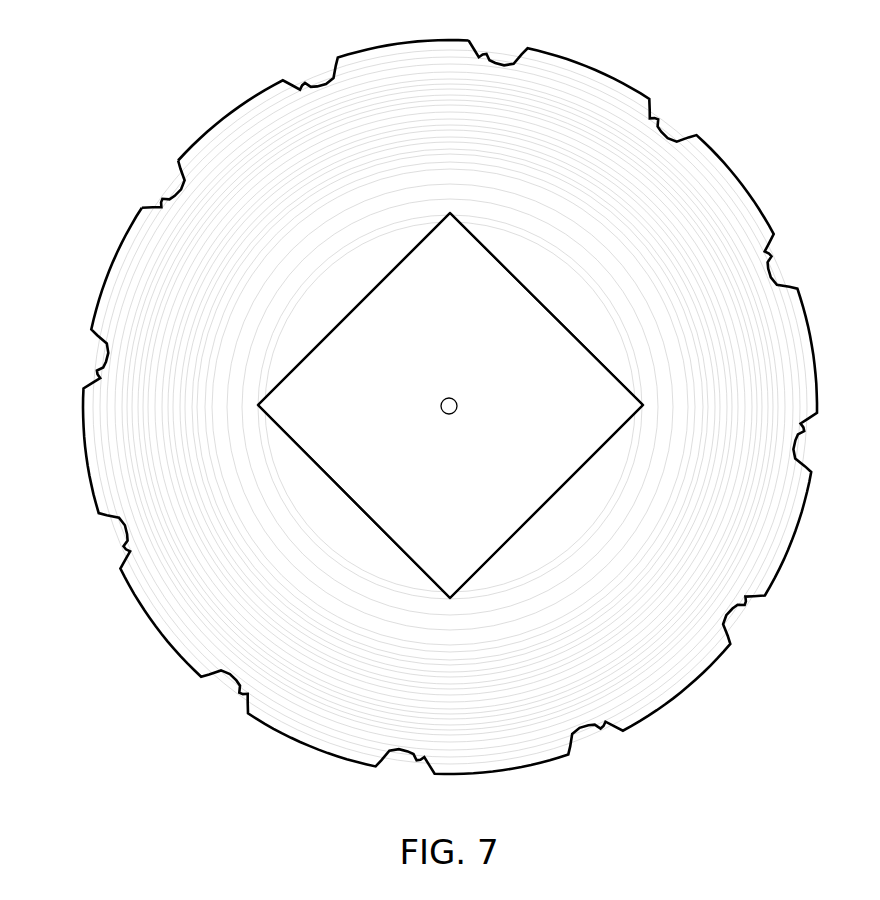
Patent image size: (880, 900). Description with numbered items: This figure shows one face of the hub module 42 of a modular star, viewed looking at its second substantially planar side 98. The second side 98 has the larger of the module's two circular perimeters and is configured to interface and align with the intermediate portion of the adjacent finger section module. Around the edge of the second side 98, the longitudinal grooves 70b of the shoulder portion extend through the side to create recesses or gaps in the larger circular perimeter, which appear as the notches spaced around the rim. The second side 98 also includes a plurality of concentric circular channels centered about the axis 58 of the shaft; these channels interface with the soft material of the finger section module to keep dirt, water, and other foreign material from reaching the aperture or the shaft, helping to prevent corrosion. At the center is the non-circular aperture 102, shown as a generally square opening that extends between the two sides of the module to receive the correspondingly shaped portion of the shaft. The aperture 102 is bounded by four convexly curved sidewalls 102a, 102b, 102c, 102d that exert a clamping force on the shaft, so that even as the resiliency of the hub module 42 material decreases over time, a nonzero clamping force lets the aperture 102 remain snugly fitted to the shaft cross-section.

The first hub module 42 is at (117, 78).
The second substantially planar side 98 is at (157, 210).
The longitudinal grooves 70b is at (778, 272).
The non-circular aperture 102 is at (357, 437).
The convexly curved sidewall 102a is at (547, 310).
The convexly curved sidewall 102b is at (546, 502).
The convexly curved sidewall 102c is at (355, 500).
The convexly curved sidewall 102d is at (353, 311).
The axis 58 is at (458, 400).